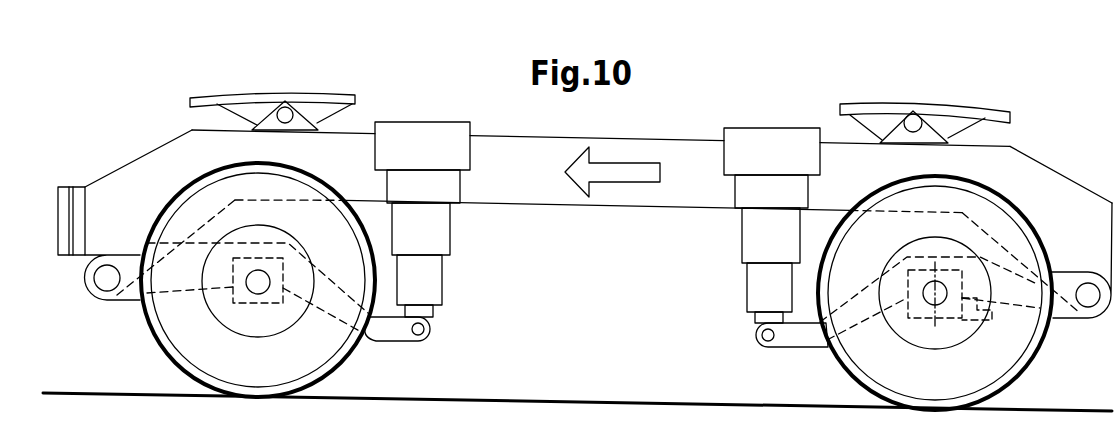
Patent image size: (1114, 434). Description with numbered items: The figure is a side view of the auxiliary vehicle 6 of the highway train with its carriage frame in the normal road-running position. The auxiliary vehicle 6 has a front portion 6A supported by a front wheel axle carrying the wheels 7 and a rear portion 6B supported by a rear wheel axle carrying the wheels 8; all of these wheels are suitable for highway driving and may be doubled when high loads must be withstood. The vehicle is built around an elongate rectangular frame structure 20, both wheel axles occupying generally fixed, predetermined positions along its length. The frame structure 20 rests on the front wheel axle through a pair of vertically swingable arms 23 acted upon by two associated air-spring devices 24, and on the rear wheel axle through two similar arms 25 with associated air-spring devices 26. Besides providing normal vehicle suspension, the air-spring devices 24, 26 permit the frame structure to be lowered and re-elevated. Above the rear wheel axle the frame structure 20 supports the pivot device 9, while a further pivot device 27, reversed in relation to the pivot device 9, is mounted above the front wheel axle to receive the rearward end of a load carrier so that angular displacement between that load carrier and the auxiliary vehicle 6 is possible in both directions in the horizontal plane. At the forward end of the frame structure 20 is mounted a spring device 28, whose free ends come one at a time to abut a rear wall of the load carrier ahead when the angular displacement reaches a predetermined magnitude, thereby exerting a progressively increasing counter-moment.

The auxiliary vehicle 6 is at (500, 128).
The front portion 6A is at (160, 152).
The rear portion 6B is at (1015, 153).
The wheels 7 is at (185, 343).
The wheels 8 is at (1012, 350).
The pivot device 9 is at (930, 110).
The further pivot device 27 is at (252, 97).
The frame structure 20 is at (617, 193).
The vertically swingable arms 23 is at (402, 337).
The air-spring devices 24 is at (447, 192).
The arms 25 is at (782, 345).
The air-spring devices 26 is at (737, 193).
The spring device 28 is at (65, 185).